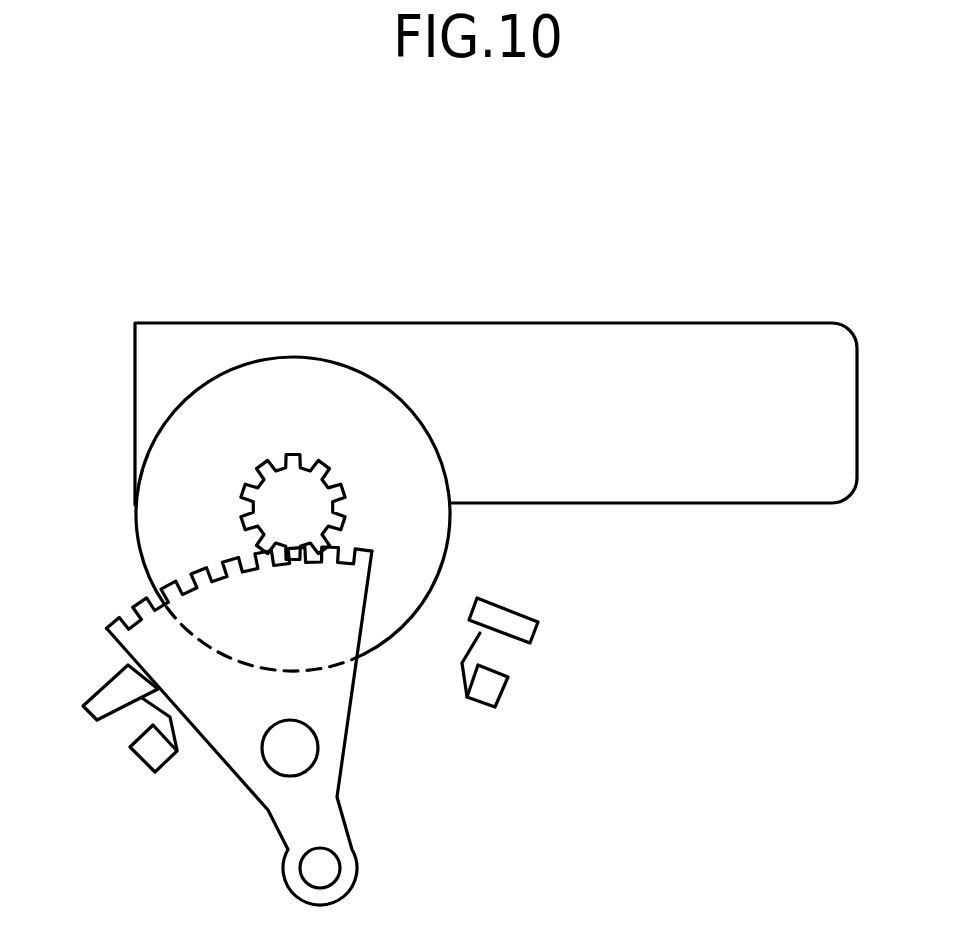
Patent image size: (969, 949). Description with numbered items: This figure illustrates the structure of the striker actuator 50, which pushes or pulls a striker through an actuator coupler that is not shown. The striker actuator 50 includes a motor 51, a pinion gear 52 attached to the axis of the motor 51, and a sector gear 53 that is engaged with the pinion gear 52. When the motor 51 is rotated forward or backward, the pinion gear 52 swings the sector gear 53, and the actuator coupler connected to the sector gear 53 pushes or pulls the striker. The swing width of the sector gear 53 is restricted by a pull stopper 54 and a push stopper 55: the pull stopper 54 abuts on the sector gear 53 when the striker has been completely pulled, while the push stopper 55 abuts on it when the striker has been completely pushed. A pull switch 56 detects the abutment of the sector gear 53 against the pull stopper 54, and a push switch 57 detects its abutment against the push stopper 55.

The striker actuator 50 is at (531, 264).
The motor 51 is at (445, 543).
The pinion gear 52 is at (293, 463).
The sector gear 53 is at (333, 730).
The pull stopper 54 is at (105, 690).
The push stopper 55 is at (527, 628).
The pull switch 56 is at (130, 747).
The push switch 57 is at (497, 690).